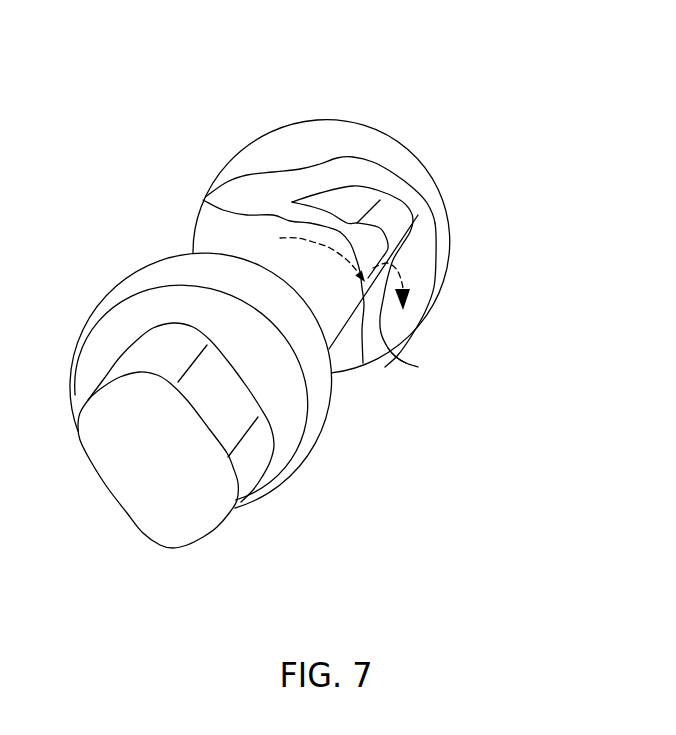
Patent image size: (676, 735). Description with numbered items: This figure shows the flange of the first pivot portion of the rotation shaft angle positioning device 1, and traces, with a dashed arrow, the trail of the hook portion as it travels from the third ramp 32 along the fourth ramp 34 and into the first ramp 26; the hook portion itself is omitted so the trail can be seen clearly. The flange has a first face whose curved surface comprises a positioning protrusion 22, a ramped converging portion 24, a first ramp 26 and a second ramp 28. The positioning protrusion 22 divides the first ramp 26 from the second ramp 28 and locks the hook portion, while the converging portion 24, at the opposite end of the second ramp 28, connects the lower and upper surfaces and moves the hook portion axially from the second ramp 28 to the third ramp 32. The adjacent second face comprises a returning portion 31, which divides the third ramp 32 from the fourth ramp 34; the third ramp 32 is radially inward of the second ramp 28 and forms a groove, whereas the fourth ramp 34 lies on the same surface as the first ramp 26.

The rotation shaft angle positioning device 1 is at (103, 144).
The positioning protrusion 22 is at (388, 213).
The ramped converging portion 24 is at (317, 182).
The first ramp 26 is at (412, 232).
The second ramp 28 is at (337, 197).
The returning portion 31 is at (363, 363).
The third ramp 32 is at (203, 200).
The fourth ramp 34 is at (406, 363).